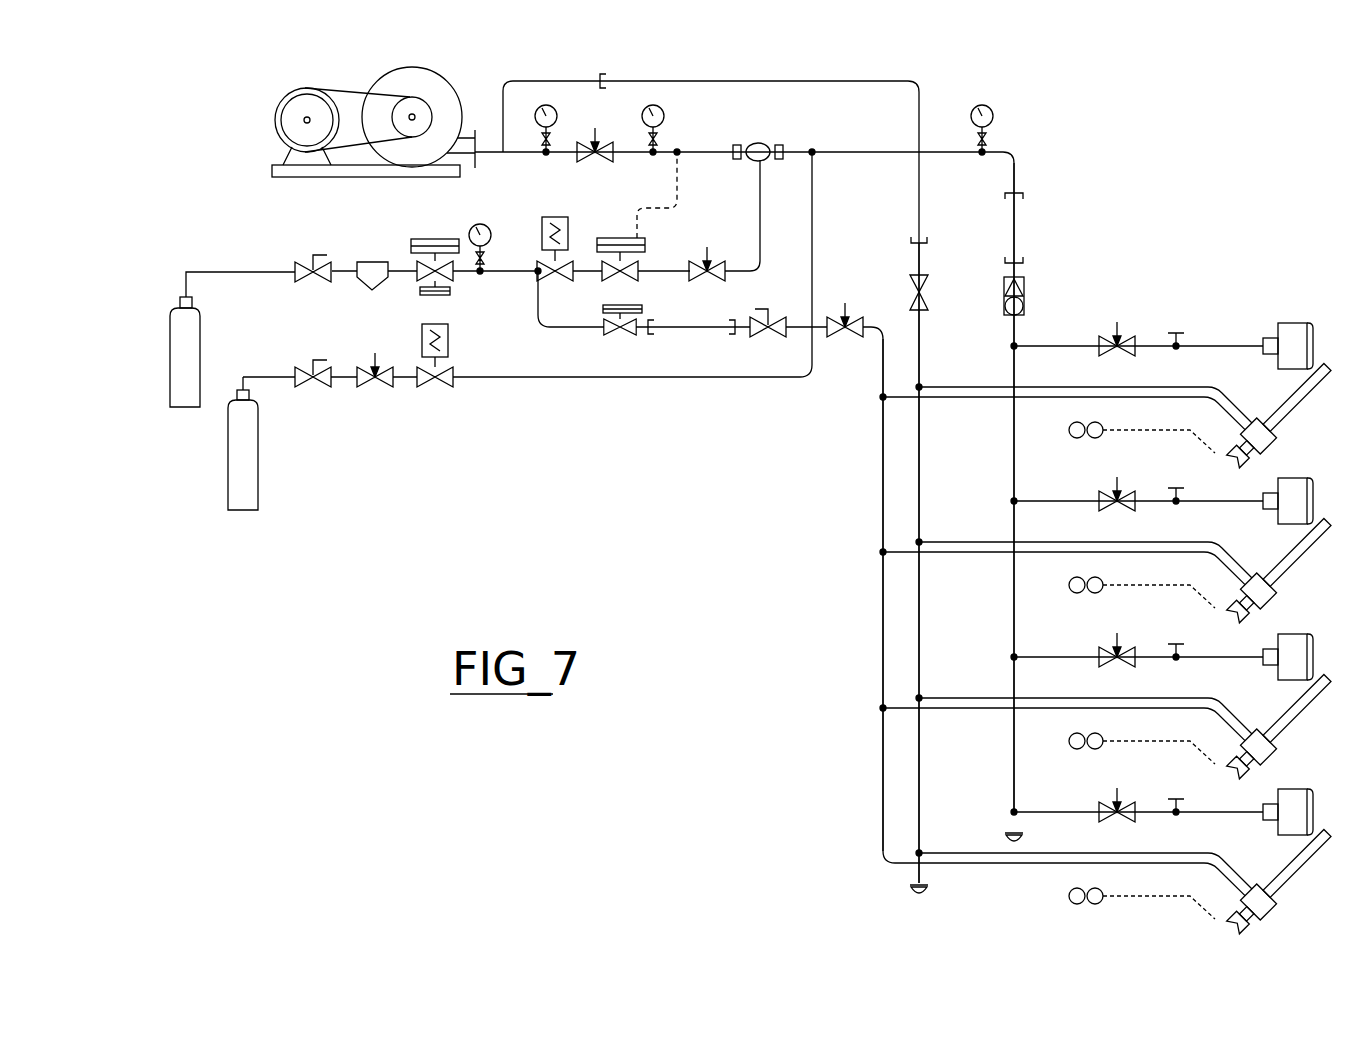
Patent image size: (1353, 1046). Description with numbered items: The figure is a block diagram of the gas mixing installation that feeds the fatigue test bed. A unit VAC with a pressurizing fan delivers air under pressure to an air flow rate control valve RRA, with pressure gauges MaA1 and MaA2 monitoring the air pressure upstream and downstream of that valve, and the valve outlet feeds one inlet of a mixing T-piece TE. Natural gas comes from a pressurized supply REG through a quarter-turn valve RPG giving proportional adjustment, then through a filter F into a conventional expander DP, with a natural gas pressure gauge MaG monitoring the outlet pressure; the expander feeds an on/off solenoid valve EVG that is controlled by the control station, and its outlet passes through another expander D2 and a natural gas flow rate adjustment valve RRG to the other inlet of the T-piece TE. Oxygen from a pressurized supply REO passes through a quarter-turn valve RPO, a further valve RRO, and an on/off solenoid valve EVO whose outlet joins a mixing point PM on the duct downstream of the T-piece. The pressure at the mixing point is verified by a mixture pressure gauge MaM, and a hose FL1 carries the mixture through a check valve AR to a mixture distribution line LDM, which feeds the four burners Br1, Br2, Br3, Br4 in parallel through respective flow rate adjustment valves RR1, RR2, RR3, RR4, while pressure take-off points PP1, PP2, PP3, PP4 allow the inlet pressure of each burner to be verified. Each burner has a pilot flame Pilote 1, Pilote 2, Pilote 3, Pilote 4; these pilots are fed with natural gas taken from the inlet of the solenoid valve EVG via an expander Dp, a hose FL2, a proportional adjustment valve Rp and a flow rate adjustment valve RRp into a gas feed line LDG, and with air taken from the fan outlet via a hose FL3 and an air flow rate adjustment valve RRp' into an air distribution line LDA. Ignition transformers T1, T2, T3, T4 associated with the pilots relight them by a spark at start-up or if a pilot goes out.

The pressurizing fan unit VAC is at (373, 118).
The air pressure gauge MaA1 is at (553, 120).
The air flow rate control valve RRA is at (597, 157).
The air pressure gauge MaA2 is at (659, 120).
The mixing T-piece TE is at (758, 135).
The mixing point PM is at (820, 133).
The hose FL3 is at (742, 81).
The mixture pressure gauge MaM is at (985, 117).
The hose FL1 is at (999, 228).
The check valve AR is at (1031, 296).
The natural gas supply REG is at (178, 343).
The quarter-turn valve RPG is at (319, 254).
The filter F is at (372, 260).
The expander DP is at (435, 254).
The natural gas pressure gauge MaG is at (486, 237).
The on/off solenoid valve EVG is at (560, 237).
The expander D2 is at (638, 215).
The natural gas flow rate adjustment valve RRG is at (712, 254).
The on/off solenoid valve EVO is at (435, 344).
The expander Dp is at (622, 308).
The hose FL2 is at (691, 336).
The proportional adjustment valve Rp is at (768, 312).
The flow rate adjustment valve RRp is at (849, 309).
The air flow rate adjustment valve RRp' is at (906, 287).
The quarter-turn valve RPO is at (320, 360).
The oxygen regulating valve RRO is at (381, 360).
The oxygen supply REO is at (237, 472).
The air distribution line LDA is at (919, 490).
The gas feed line LDG is at (883, 530).
The mixture distribution line LDM is at (1014, 480).
The flow rate adjustment valve RR1 is at (1116, 328).
The pressure take-off point PP1 is at (1182, 324).
The burner Br1 is at (1286, 333).
The pilot flame Pilote 1 is at (1288, 414).
The ignition transformer T1 is at (1128, 431).
The flow rate adjustment valve RR2 is at (1116, 483).
The pressure take-off point PP2 is at (1182, 479).
The burner Br2 is at (1286, 488).
The pilot flame Pilote 2 is at (1288, 569).
The ignition transformer T2 is at (1128, 586).
The flow rate adjustment valve RR3 is at (1116, 639).
The pressure take-off point PP3 is at (1182, 635).
The burner Br3 is at (1286, 644).
The pilot flame Pilote 3 is at (1288, 725).
The ignition transformer T3 is at (1128, 742).
The flow rate adjustment valve RR4 is at (1116, 794).
The pressure take-off point PP4 is at (1182, 790).
The burner Br4 is at (1286, 799).
The pilot flame Pilote 4 is at (1288, 880).
The ignition transformer T4 is at (1128, 897).